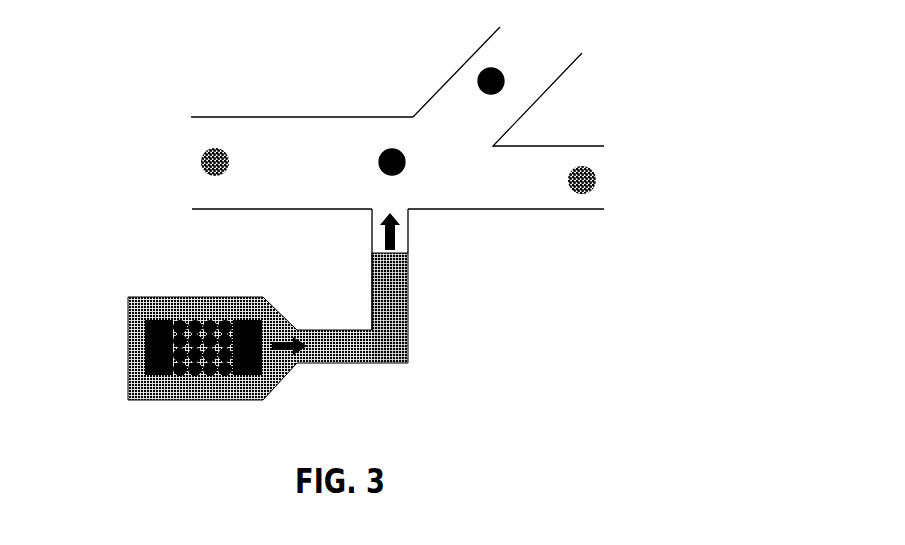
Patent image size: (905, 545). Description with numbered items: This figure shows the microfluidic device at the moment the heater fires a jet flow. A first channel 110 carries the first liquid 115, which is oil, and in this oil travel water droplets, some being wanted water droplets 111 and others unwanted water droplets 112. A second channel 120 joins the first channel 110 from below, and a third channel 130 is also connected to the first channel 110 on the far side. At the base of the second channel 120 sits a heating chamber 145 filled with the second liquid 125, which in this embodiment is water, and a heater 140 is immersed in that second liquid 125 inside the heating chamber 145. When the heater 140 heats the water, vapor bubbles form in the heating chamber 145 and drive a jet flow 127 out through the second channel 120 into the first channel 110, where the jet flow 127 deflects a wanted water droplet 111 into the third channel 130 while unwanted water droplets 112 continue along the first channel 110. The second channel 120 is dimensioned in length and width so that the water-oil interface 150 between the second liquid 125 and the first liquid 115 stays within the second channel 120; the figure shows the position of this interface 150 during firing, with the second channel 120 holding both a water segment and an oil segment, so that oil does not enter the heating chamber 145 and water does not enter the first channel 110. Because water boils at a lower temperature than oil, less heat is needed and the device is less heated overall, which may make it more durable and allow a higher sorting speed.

The first channel 110 is at (217, 212).
The wanted water droplets 111 is at (385, 152).
The unwanted water droplets 112 is at (205, 155).
The first liquid 115 is at (217, 133).
The second channel 120 is at (368, 287).
The second liquid 125 is at (153, 312).
The jet flow 127 is at (397, 233).
The third channel 130 is at (493, 29).
The heater 140 is at (145, 362).
The heating chamber 145 is at (148, 295).
The interface 150 is at (392, 255).